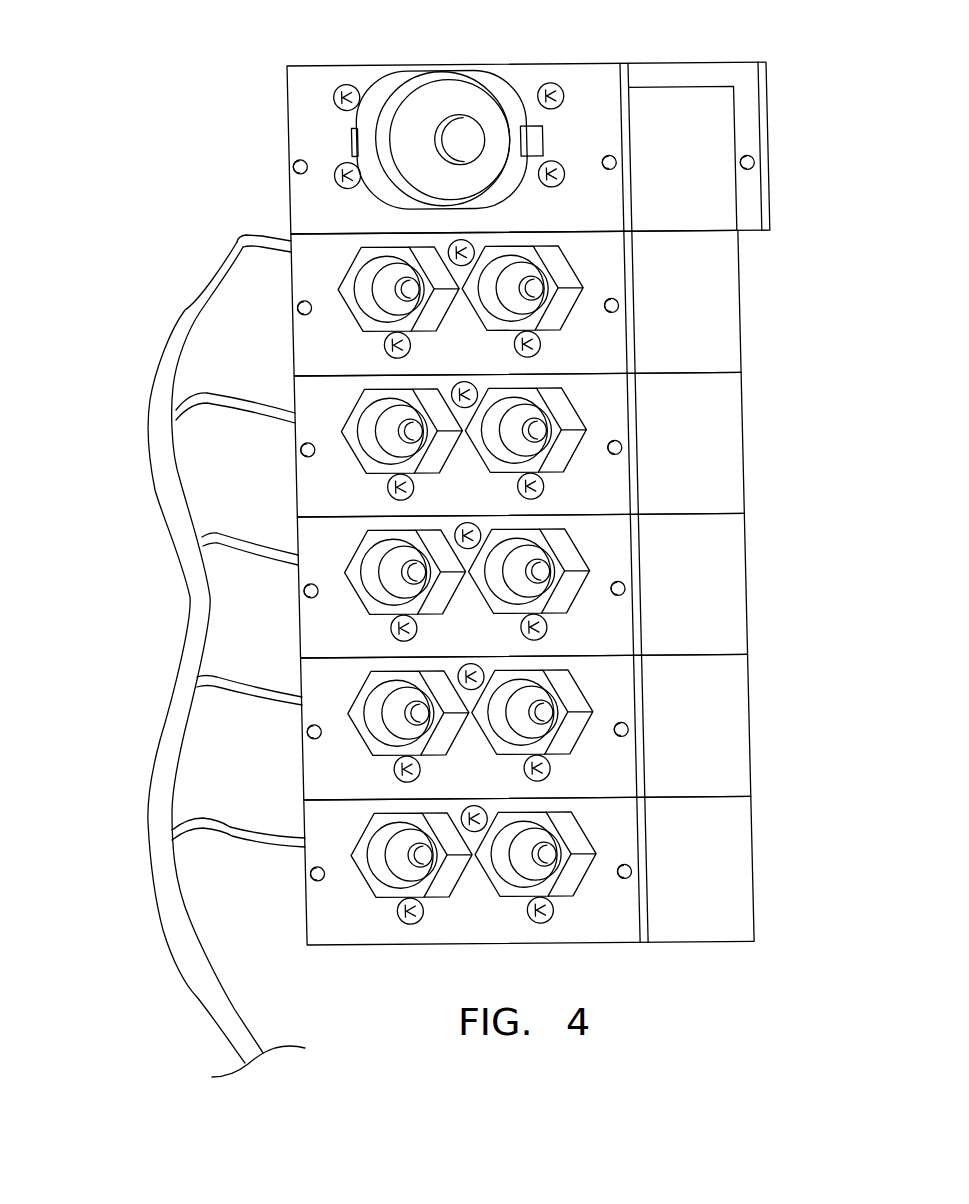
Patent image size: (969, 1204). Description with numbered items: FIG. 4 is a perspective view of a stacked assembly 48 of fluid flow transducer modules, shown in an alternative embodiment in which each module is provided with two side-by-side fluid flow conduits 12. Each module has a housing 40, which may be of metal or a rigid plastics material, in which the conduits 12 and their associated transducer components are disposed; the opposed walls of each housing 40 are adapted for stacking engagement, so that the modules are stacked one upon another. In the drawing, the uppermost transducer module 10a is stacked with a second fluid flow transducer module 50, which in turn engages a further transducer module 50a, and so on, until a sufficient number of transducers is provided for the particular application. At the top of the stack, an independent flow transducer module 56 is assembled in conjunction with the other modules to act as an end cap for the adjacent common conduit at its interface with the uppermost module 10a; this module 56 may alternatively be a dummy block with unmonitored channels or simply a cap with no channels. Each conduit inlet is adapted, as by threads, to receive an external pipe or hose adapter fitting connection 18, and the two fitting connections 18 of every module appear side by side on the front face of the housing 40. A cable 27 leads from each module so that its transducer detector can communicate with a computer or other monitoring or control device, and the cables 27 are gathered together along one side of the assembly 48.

The independent flow transducer module 56 is at (533, 63).
The uppermost transducer module 10a is at (597, 248).
The pipe or hose adapter fitting connection 18 is at (562, 277).
The fluid flow conduit 12 is at (525, 307).
The housing 40 is at (605, 353).
The second fluid flow transducer module 50 is at (613, 413).
The further transducer module 50a is at (615, 542).
The cable 27 is at (255, 233).
The assembly 48 is at (128, 511).